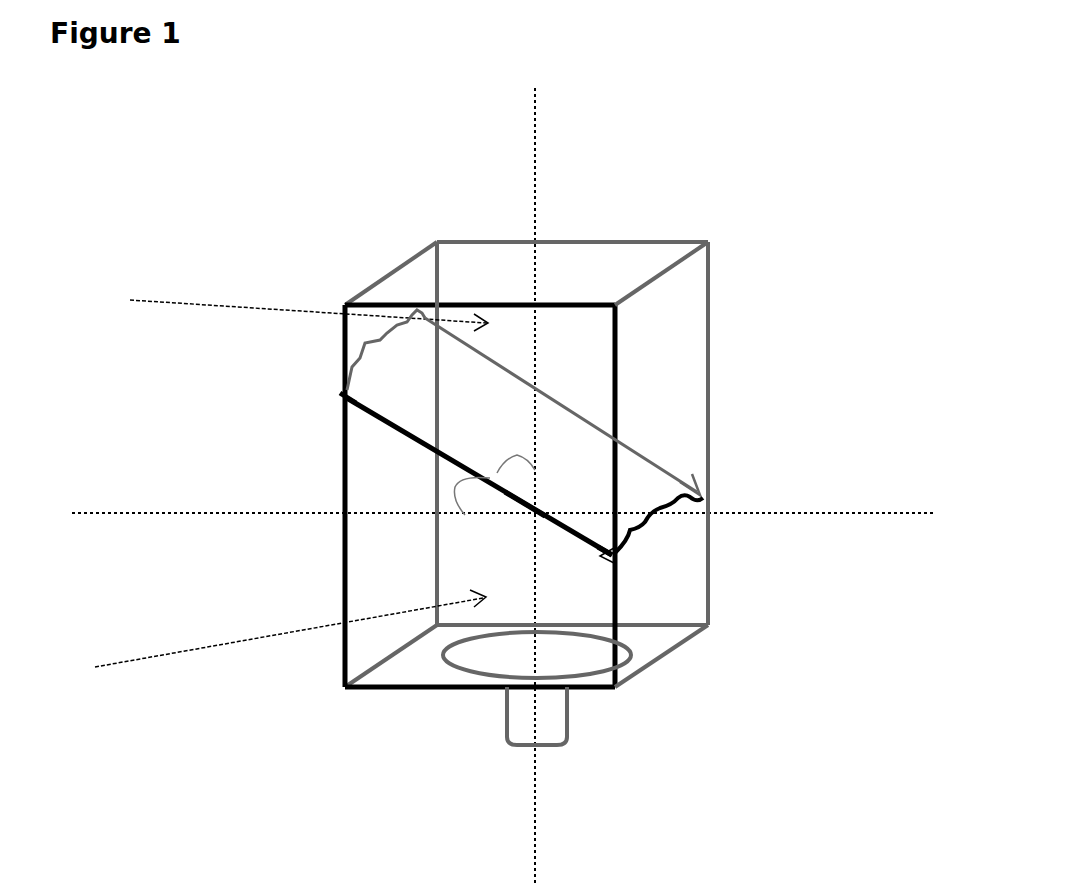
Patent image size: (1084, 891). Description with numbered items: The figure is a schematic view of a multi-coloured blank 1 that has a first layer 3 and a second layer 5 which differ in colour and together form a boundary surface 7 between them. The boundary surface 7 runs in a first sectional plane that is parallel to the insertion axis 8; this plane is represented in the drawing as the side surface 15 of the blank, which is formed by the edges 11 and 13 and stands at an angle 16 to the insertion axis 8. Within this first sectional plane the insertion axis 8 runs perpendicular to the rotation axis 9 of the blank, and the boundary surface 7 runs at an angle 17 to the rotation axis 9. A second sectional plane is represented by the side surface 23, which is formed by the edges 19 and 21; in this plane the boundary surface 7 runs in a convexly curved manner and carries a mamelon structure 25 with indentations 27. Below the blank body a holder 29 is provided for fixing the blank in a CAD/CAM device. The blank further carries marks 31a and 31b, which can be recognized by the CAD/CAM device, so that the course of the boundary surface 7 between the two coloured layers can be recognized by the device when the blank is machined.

The multi-coloured blank 1 is at (728, 226).
The first layer 3 is at (274, 641).
The second layer 5 is at (293, 306).
The boundary surface 7 is at (415, 445).
The insertion axis 8 is at (808, 513).
The rotation axis 9 is at (540, 805).
The edge 11 is at (405, 688).
The edge 13 is at (343, 643).
The side surface 15 is at (465, 548).
The angle 16 is at (485, 500).
The angle 17 is at (523, 488).
The edge 19 is at (666, 655).
The edge 21 is at (715, 598).
The side surface 23 is at (675, 300).
The mamelon structure 25 is at (683, 465).
The indentations 27 is at (641, 504).
The holder 29 is at (548, 727).
The mark 31a is at (343, 397).
The mark 31b is at (620, 560).